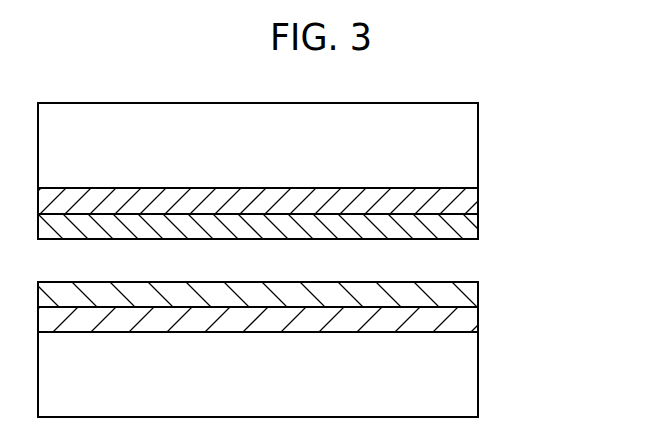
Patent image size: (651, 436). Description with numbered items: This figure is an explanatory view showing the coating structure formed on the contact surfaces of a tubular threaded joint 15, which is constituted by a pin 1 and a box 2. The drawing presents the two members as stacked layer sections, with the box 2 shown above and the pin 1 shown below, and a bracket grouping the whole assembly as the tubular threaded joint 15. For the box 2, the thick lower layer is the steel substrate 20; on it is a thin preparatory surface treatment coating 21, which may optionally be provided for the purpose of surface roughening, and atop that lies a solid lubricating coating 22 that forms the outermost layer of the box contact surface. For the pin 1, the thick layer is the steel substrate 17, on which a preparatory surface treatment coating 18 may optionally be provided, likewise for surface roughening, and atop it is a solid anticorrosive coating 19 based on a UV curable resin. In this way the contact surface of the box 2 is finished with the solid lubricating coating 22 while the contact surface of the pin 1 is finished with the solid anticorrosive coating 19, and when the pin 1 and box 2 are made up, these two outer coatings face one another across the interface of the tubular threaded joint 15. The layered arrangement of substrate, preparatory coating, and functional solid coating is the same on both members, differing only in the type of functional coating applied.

The tubular threaded joint 15 is at (315, 260).
The box 2 is at (290, 174).
The pin 1 is at (283, 349).
The steel substrate 20 is at (472, 146).
The preparatory surface treatment coating 21 is at (472, 199).
The solid lubricating coating 22 is at (472, 227).
The solid anticorrosive coating 19 is at (472, 291).
The preparatory surface treatment coating 18 is at (472, 318).
The steel substrate 17 is at (472, 374).